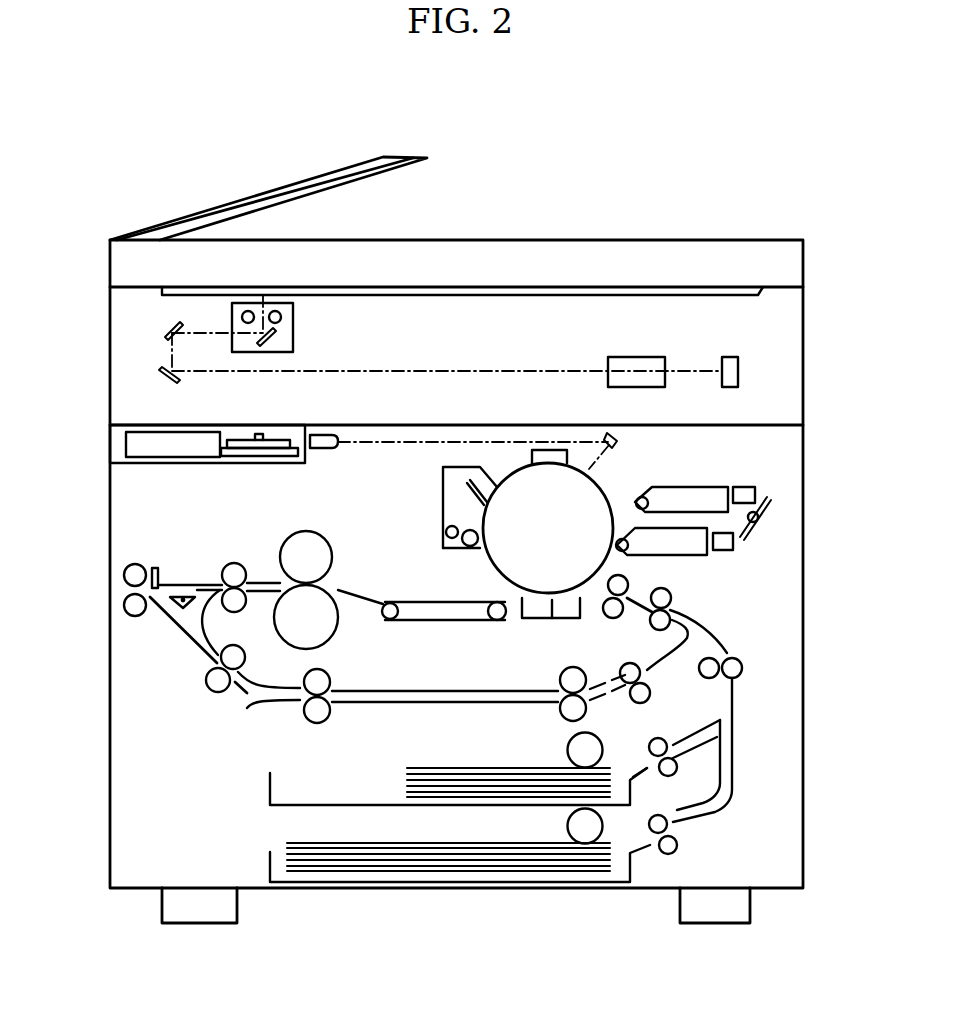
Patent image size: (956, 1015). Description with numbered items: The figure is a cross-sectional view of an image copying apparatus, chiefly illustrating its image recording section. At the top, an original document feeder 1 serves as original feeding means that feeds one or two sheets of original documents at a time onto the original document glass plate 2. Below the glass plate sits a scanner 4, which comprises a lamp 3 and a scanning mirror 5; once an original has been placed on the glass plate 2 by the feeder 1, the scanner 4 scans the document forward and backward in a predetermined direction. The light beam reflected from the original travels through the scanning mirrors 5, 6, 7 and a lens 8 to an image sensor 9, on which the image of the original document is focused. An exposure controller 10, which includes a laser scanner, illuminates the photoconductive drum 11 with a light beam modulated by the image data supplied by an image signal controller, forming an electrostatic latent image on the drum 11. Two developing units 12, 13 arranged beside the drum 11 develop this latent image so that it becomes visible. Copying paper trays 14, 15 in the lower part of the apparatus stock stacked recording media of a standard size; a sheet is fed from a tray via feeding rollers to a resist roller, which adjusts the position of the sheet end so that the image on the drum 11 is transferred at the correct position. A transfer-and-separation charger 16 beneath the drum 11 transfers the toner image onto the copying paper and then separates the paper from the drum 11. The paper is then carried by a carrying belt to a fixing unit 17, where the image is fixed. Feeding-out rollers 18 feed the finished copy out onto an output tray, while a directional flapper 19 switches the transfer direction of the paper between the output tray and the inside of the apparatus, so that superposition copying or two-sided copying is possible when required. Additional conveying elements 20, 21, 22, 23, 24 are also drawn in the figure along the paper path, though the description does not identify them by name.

The original cover 1 is at (222, 206).
The platen glass 2 is at (700, 287).
The lamps 3 is at (283, 315).
The scanning unit 4 is at (291, 344).
The mirror 5 is at (265, 343).
The mirror 6 is at (165, 328).
The mirror 7 is at (165, 375).
The lens 8 is at (636, 357).
The image sensor 9 is at (726, 357).
The laser scanner unit 10 is at (230, 427).
The photosensitive drum 11 is at (520, 470).
The developing unit 12 is at (695, 493).
The developing unit 13 is at (680, 550).
The paper cassette 14 is at (623, 793).
The paper cassette 15 is at (620, 885).
The transfer charger 16 is at (540, 620).
The fixing rollers 17 is at (275, 607).
The discharge rollers 18 is at (124, 600).
The paper sensor 19 is at (155, 568).
The switching flapper 20 is at (168, 613).
The conveying rollers 21 is at (187, 590).
The conveying rollers 22 is at (200, 642).
The conveying rollers 23 is at (278, 706).
The re-feed conveying path 24 is at (510, 700).